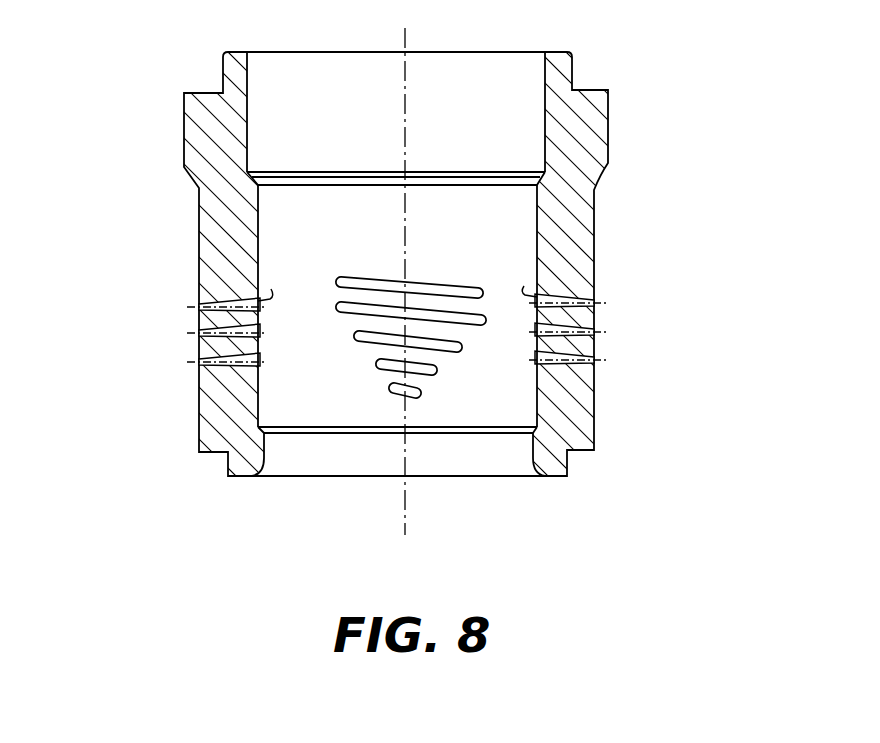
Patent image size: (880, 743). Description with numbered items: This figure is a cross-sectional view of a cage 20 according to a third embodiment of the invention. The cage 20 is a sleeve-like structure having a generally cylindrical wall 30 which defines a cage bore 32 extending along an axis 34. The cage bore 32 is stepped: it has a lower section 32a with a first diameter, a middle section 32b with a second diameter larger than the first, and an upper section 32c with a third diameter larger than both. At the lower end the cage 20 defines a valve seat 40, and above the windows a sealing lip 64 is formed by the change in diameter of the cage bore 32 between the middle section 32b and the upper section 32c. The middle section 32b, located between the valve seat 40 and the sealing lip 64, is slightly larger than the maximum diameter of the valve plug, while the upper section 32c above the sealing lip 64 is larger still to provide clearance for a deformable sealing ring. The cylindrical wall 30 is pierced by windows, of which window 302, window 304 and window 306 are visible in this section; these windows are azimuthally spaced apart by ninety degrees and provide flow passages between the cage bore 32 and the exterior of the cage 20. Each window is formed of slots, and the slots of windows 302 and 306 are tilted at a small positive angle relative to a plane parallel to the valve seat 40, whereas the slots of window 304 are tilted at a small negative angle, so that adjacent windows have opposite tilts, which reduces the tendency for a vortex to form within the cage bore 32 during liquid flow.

The cage 20 is at (185, 135).
The cylindrical wall 30 is at (198, 245).
The cage bore 32 is at (477, 463).
The lower section 32a is at (267, 458).
The middle section 32b is at (258, 223).
The upper section 32c is at (247, 102).
The axis 34 is at (405, 133).
The valve seat 40 is at (415, 435).
The sealing lip 64 is at (253, 167).
The window 302 is at (193, 352).
The window 304 is at (440, 273).
The window 306 is at (607, 345).